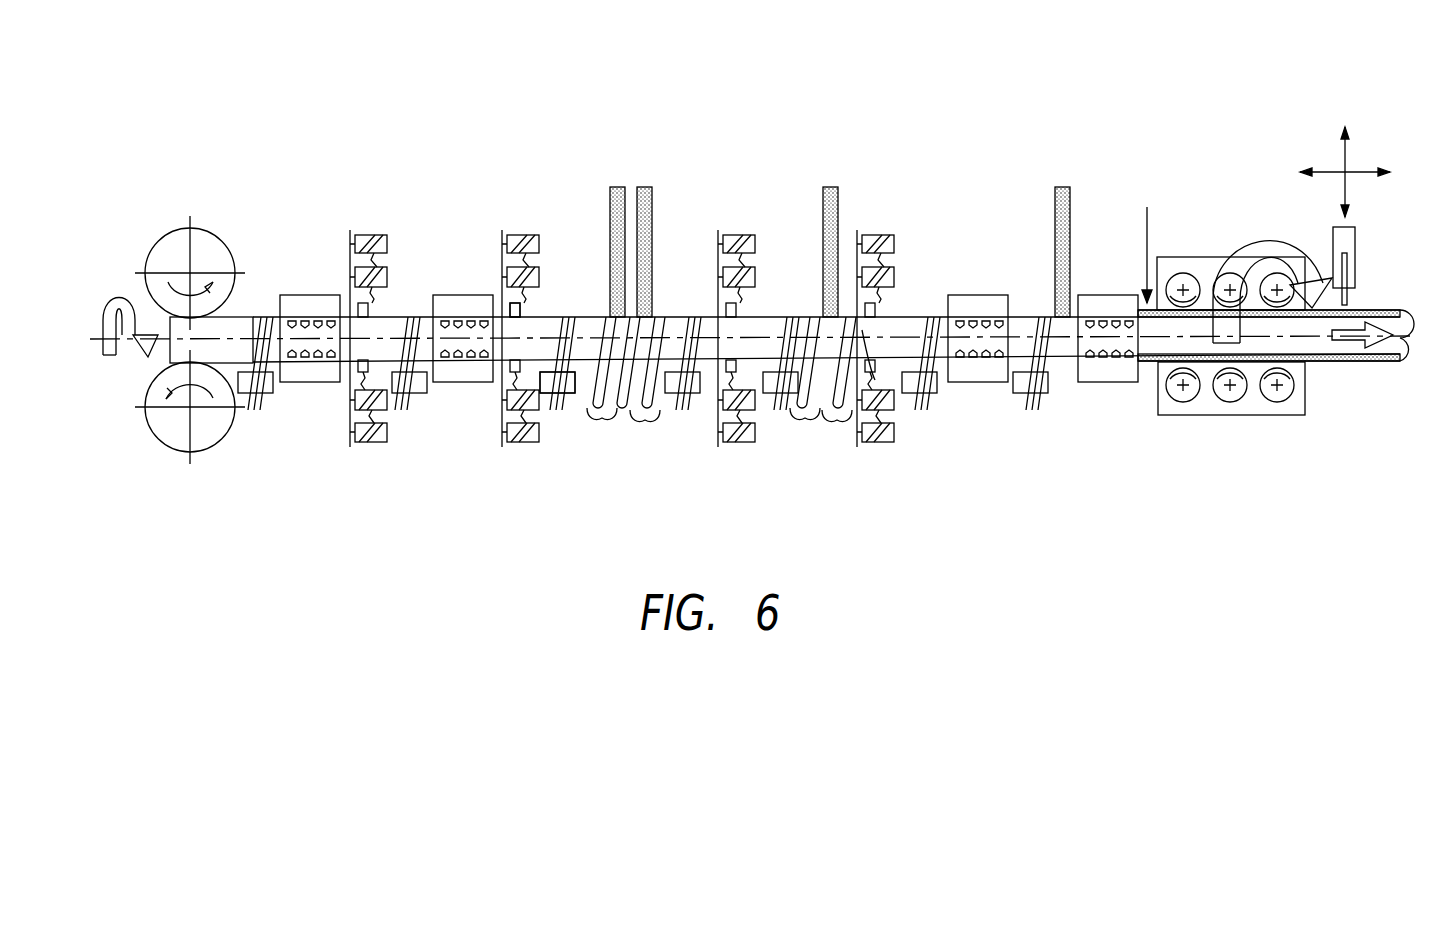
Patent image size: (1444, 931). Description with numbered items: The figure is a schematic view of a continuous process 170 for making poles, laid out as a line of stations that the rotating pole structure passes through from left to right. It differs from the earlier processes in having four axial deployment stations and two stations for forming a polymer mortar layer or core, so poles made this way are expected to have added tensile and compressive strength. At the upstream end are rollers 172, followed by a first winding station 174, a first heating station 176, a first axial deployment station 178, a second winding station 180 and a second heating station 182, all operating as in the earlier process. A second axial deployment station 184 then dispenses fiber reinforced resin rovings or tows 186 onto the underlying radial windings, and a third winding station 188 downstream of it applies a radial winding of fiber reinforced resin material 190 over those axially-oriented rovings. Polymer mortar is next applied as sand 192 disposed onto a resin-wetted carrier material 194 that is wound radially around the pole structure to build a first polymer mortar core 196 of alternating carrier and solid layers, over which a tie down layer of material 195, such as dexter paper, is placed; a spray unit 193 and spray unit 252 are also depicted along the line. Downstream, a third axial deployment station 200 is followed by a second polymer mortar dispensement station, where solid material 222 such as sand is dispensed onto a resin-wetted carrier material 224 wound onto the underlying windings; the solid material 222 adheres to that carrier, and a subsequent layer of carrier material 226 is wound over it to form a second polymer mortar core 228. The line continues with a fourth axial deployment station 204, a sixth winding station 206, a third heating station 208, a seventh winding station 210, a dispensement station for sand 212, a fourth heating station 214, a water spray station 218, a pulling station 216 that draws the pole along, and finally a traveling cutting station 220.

The continuous process 170 is at (915, 144).
The rollers 172 is at (205, 243).
The first winding station 174 is at (265, 392).
The first heating station 176 is at (287, 302).
The first axial deployment station 178 is at (388, 240).
The second winding station 180 is at (418, 392).
The second heating station 182 is at (440, 304).
The second axial deployment station 184 is at (537, 240).
The fiber reinforced resin rovings or tows 186 is at (505, 305).
The third winding station 188 is at (562, 398).
The fiber reinforced resin material 190 is at (563, 330).
The sand 192 is at (650, 200).
The spray unit 193 is at (695, 395).
The carrier material 194 is at (592, 408).
The tie down layer of material 195 is at (648, 422).
The first polymer mortar core 196 is at (680, 315).
The third axial deployment station 200 is at (755, 243).
The fourth axial deployment station 204 is at (893, 240).
The sixth winding station 206 is at (928, 395).
The third heating station 208 is at (992, 298).
The seventh winding station 210 is at (1040, 390).
The sand 212 is at (1065, 200).
The fourth heating station 214 is at (1115, 380).
The pulling station 216 is at (1188, 270).
The water spray station 218 is at (1150, 215).
The traveling cutting station 220 is at (1350, 245).
The solid material 222 is at (825, 285).
The carrier material 224 is at (808, 420).
The subsequent layer of carrier material 226 is at (838, 420).
The second polymer mortar core 228 is at (862, 372).
The spray unit 252 is at (792, 390).